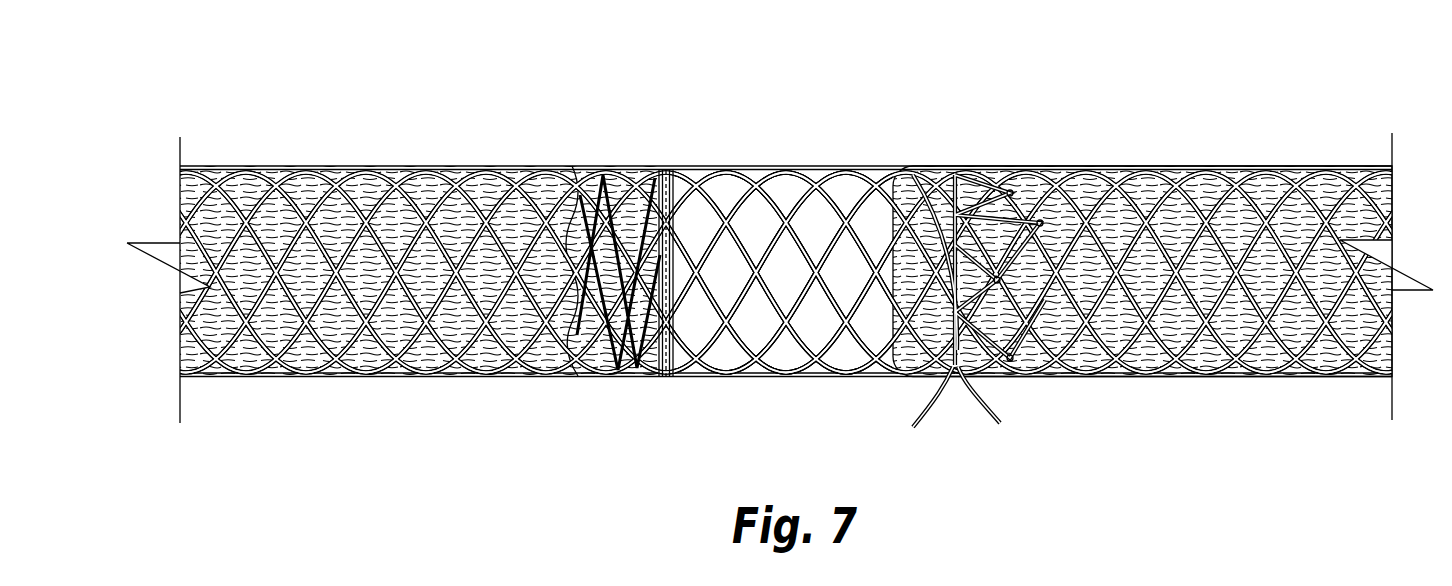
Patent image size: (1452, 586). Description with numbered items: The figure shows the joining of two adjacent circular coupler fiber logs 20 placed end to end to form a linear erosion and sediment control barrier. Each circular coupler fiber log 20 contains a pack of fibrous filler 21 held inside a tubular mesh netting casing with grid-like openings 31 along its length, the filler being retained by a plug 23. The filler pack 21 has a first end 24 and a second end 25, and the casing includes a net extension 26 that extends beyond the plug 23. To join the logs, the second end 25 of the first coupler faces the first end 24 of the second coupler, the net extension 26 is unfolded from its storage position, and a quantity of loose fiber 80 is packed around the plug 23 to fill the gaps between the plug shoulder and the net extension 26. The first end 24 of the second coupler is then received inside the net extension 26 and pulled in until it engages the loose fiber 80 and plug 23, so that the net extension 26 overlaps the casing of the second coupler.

The circular coupler fiber log 20 is at (372, 120).
The pack of fibrous filler 21 is at (453, 215).
The plug 23 is at (607, 375).
The first end 24 is at (913, 182).
The second end 25 is at (543, 198).
The net extension 26 is at (758, 380).
The grid-like openings 31 is at (1172, 182).
The loose fiber 80 is at (667, 202).